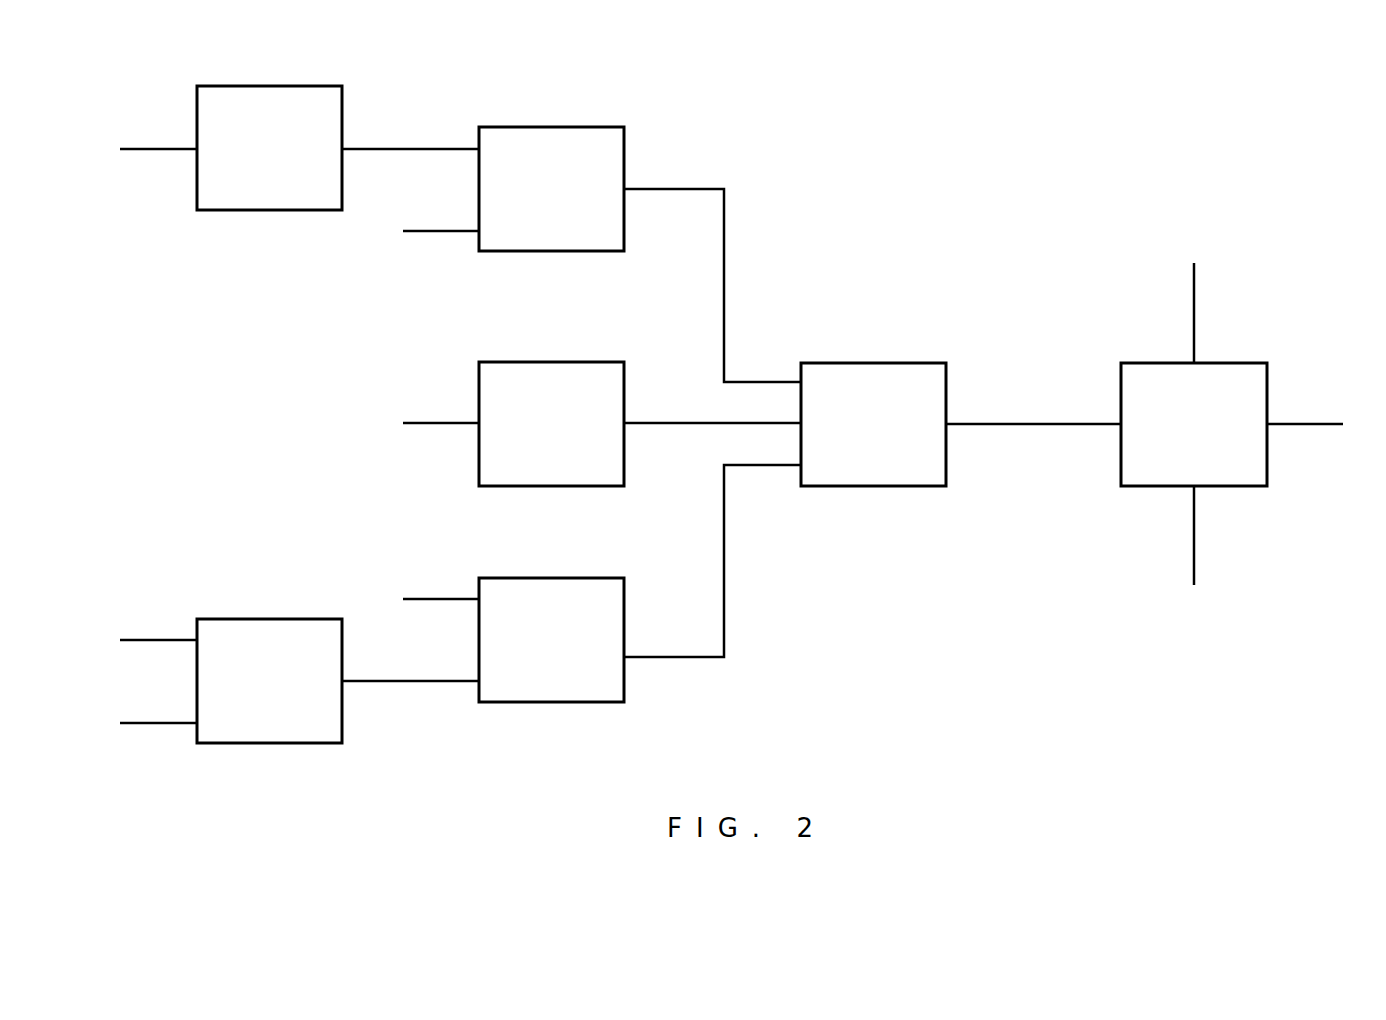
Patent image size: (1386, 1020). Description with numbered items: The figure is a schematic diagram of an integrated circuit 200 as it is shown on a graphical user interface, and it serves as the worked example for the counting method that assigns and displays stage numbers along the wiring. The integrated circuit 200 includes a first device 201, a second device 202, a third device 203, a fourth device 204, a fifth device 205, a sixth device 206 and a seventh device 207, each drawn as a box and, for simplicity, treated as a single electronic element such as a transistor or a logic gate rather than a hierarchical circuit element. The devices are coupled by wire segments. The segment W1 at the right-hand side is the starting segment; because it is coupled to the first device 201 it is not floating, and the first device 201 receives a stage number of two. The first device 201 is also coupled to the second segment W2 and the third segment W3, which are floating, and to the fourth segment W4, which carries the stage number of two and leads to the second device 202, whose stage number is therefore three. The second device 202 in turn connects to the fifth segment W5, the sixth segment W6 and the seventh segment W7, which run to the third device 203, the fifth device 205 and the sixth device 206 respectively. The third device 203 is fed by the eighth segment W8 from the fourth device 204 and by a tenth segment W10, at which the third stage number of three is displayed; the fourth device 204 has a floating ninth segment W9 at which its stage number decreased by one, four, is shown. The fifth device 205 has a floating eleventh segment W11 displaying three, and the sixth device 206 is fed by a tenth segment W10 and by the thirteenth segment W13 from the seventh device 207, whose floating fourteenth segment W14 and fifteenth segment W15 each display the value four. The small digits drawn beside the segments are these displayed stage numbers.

The integrated circuit 200 is at (1348, 123).
The first device 201 is at (1168, 440).
The second device 202 is at (847, 440).
The third device 203 is at (525, 205).
The fourth device 204 is at (243, 164).
The fifth device 205 is at (525, 440).
The sixth device 206 is at (525, 656).
The seventh device 207 is at (243, 697).
The segment W1 is at (1305, 427).
The second segment W2 is at (1178, 313).
The third segment W3 is at (1178, 535).
The fourth segment W4 is at (1033, 422).
The fifth segment W5 is at (712, 305).
The sixth segment W6 is at (712, 426).
The seventh segment W7 is at (712, 561).
The eighth segment W8 is at (410, 149).
The ninth segment W9 is at (158, 149).
The tenth segment W10 is at (441, 418).
The eleventh segment W11 is at (441, 426).
The thirteenth segment W13 is at (410, 683).
The fourteenth segment W14 is at (158, 643).
The fifteenth segment W15 is at (158, 725).